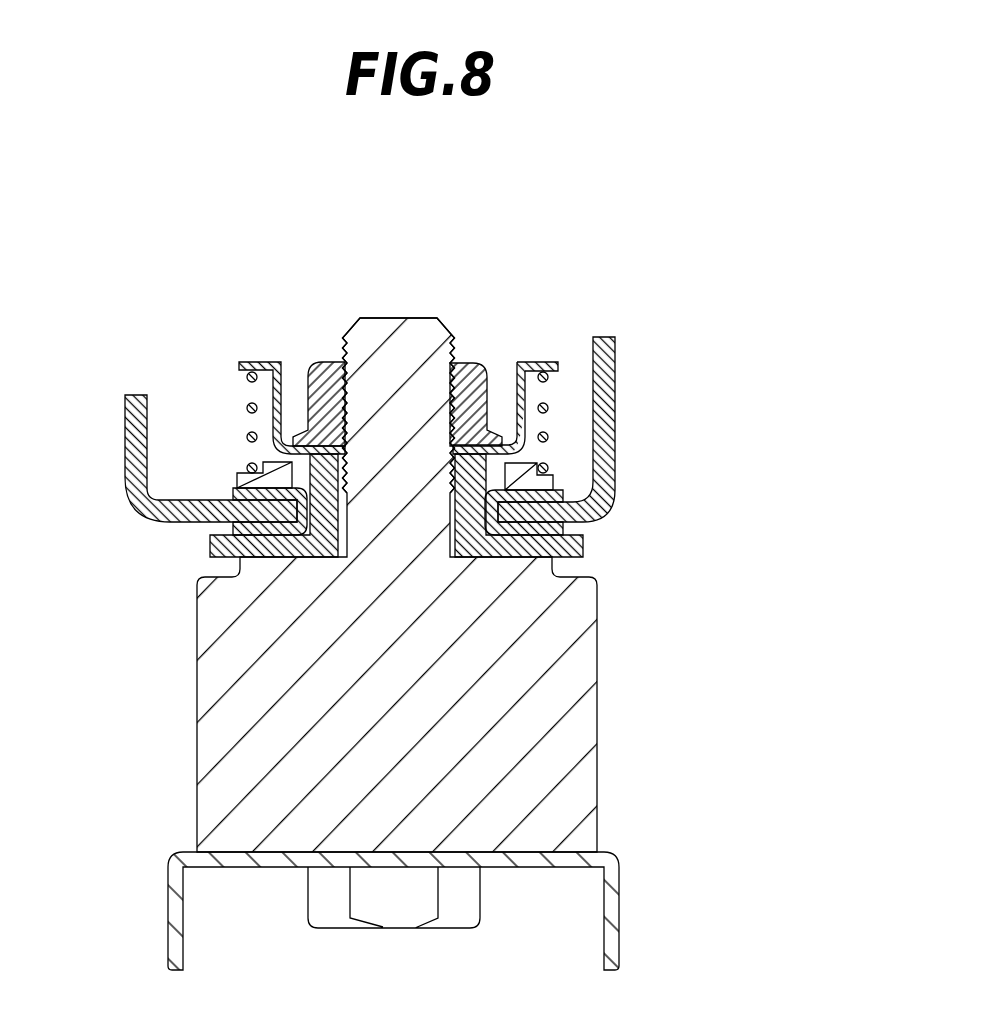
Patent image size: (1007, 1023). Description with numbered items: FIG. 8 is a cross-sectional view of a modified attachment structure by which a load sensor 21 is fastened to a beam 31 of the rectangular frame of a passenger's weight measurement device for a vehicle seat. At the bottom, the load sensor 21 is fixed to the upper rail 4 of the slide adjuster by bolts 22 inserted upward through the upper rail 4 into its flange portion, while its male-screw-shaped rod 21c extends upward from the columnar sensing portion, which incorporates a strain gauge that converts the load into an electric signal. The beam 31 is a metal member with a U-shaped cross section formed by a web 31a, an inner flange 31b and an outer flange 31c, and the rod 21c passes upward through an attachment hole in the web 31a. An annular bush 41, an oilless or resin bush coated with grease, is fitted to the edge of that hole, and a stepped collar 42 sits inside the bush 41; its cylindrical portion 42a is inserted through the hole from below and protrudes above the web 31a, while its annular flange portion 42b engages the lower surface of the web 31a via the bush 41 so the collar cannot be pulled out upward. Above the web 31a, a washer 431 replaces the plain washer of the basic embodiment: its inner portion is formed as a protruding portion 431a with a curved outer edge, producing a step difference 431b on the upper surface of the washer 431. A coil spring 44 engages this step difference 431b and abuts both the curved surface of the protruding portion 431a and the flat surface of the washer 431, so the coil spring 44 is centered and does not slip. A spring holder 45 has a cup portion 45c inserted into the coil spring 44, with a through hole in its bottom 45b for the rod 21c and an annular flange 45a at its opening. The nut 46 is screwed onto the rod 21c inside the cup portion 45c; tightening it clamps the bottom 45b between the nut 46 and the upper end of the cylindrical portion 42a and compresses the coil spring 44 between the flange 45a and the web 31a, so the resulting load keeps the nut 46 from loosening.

The upper rail 4 is at (623, 892).
The load sensor 21 is at (505, 805).
The rod 21c is at (372, 340).
The bolt 22 is at (387, 908).
The beam 31 is at (377, 434).
The web 31a is at (188, 515).
The inner flange 31b is at (132, 446).
The outer flange 31c is at (603, 415).
The bush 41 is at (552, 497).
The stepped collar 42 is at (626, 528).
The cylindrical portion 42a is at (590, 508).
The flange portion 42b is at (577, 545).
The coil spring 44 is at (243, 407).
The spring holder 45 is at (389, 332).
The annular flange 45a is at (533, 362).
The bottom 45b is at (468, 447).
The cup portion 45c is at (513, 372).
The nut 46 is at (312, 372).
The washer 431 is at (245, 480).
The protruding portion 431a is at (277, 472).
The step difference 431b is at (550, 477).